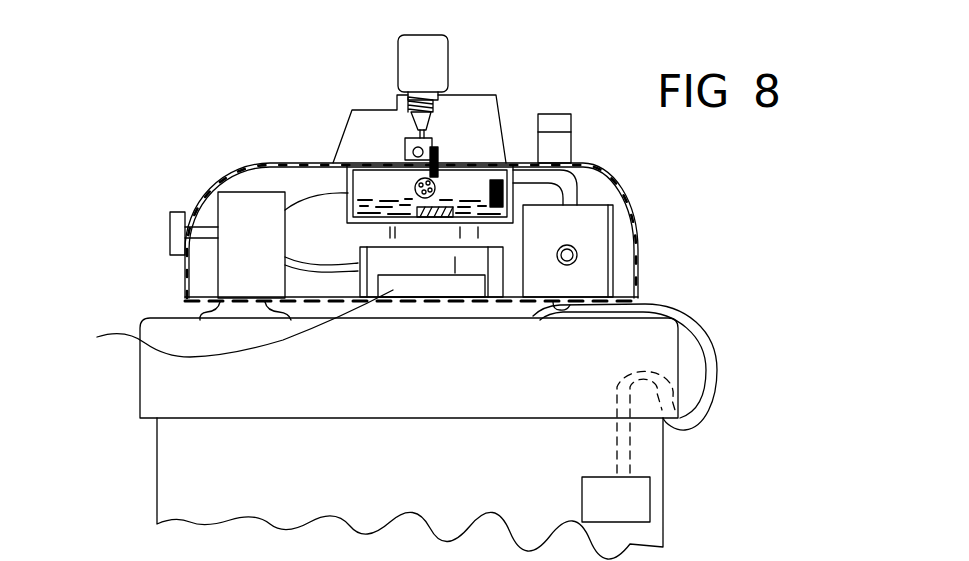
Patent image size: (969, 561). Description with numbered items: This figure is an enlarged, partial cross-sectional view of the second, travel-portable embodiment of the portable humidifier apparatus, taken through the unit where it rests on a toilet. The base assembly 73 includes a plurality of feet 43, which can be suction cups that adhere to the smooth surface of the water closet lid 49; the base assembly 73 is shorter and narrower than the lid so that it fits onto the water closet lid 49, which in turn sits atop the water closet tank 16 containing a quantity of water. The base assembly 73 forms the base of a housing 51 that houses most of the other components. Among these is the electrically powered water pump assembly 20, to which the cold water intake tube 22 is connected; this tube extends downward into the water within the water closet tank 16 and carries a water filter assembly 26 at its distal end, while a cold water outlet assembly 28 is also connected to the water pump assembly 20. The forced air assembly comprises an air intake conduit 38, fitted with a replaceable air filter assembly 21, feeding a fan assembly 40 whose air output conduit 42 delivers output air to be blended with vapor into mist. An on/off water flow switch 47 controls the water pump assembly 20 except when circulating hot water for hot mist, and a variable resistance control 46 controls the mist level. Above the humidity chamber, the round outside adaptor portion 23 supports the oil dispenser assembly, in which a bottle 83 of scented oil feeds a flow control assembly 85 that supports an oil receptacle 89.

The water closet tank 16 is at (370, 488).
The water pump assembly 20 is at (626, 231).
The replaceable air filter assembly 21 is at (228, 324).
The cold water intake tube 22 is at (657, 388).
The outside adaptor portion 23 is at (331, 160).
The water filter assembly 26 is at (679, 484).
The cold water outlet assembly 28 is at (583, 167).
The air intake conduit 38 is at (326, 266).
The fan assembly 40 is at (248, 215).
The air output conduit 42 is at (307, 217).
The feet 43 is at (233, 313).
The variable resistance control 46 is at (172, 212).
The on/off water flow switch 47 is at (497, 190).
The water closet lid 49 is at (172, 380).
The housing 51 is at (444, 216).
The base assembly 73 is at (726, 280).
The bottle 83 is at (466, 50).
The flow control assembly 85 is at (408, 142).
The oil receptacle 89 is at (417, 182).